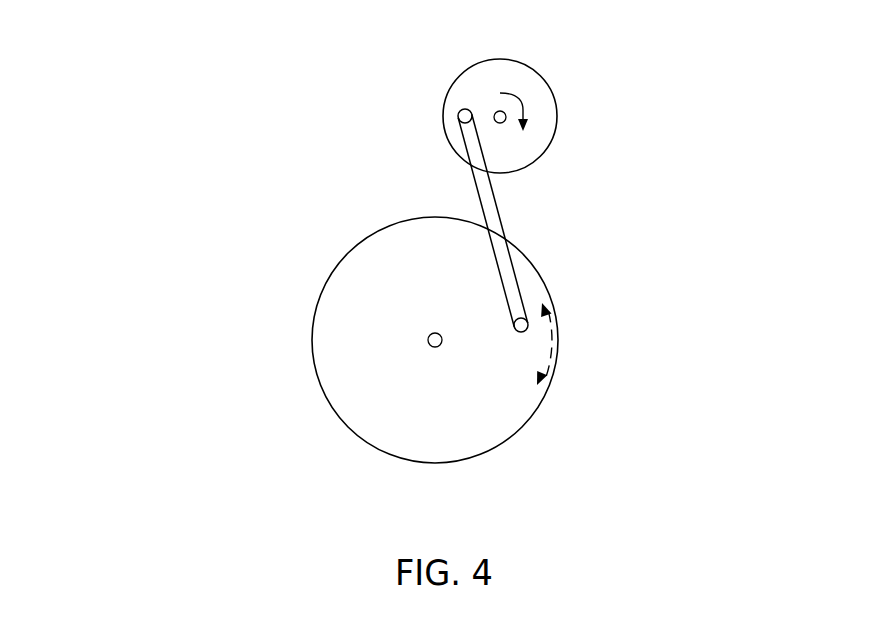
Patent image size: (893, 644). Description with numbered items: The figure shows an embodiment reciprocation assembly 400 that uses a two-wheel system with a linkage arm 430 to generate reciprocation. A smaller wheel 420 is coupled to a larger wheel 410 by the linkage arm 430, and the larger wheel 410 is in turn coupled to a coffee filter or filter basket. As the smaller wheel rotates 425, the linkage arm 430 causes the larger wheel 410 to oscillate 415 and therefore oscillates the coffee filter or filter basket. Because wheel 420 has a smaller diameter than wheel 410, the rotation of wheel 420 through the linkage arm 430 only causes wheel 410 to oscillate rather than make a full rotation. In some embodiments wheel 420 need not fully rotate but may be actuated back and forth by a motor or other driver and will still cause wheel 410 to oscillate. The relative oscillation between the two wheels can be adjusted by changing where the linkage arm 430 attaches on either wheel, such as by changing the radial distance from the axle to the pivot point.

The reciprocation assembly 400 is at (200, 219).
The larger wheel 410 is at (313, 353).
The oscillation 415 is at (553, 335).
The smaller wheel 420 is at (557, 127).
The wheel rotation 425 is at (523, 107).
The linkage arm 430 is at (499, 222).